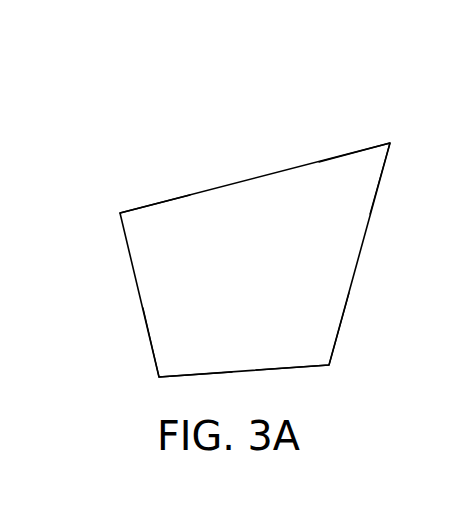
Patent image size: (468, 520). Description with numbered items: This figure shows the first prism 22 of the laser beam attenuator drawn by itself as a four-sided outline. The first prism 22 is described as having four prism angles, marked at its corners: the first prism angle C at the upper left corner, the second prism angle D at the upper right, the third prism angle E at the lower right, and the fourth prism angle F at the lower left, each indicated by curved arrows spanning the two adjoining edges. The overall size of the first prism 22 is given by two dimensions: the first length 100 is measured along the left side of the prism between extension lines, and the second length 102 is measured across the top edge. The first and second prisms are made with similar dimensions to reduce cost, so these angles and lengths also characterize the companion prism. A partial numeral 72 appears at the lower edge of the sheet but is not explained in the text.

The first prism 22 is at (256, 268).
The first length 100 is at (100, 218).
The second length 102 is at (386, 128).
The first prism angle C is at (190, 197).
The second prism angle D is at (319, 162).
The third prism angle E is at (349, 293).
The fourth prism angle F is at (143, 308).
The element 72 is at (0, 498).